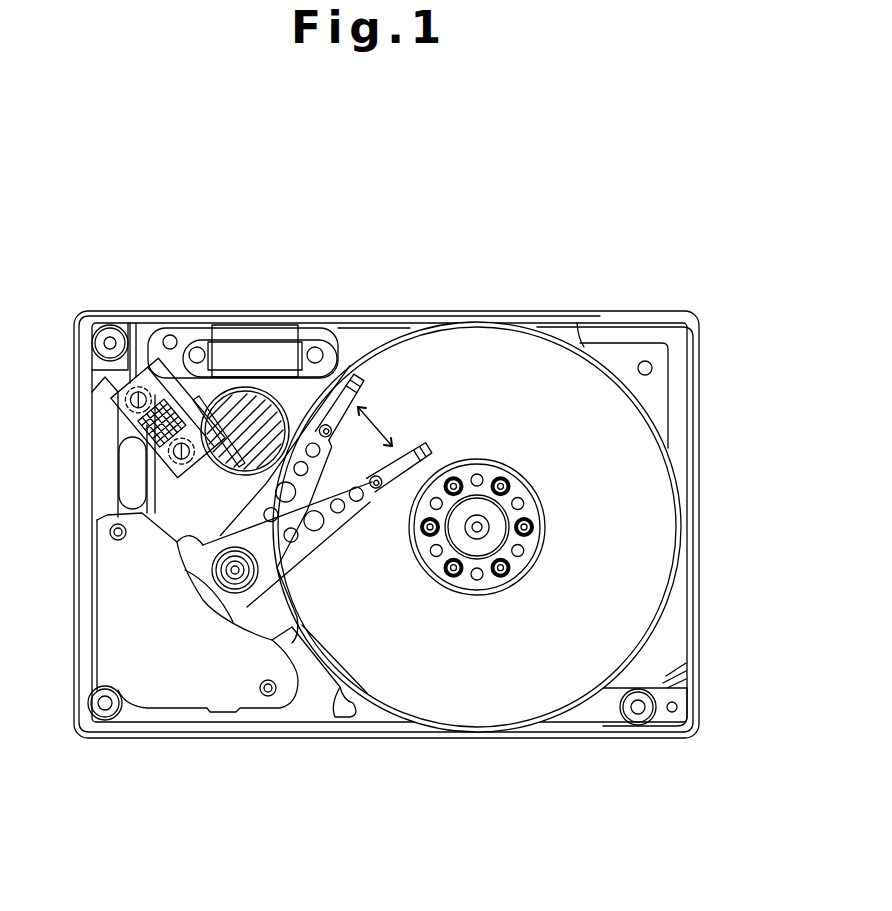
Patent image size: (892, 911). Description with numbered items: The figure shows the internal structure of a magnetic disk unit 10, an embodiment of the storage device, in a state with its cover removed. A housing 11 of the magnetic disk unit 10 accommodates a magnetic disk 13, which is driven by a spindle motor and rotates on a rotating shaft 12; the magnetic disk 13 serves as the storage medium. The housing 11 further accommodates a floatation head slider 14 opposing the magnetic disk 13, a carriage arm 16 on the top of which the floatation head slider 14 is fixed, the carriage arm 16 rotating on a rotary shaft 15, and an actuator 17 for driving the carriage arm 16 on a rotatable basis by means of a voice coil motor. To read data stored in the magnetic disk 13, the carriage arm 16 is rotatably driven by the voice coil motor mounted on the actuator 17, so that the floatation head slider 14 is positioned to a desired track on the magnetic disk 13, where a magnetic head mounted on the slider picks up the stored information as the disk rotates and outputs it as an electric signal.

The magnetic disk unit 10 is at (430, 474).
The housing 11 is at (575, 312).
The rotating shaft 12 is at (495, 535).
The magnetic disk 13 is at (650, 488).
The floatation head slider 14 is at (418, 447).
The rotary shaft 15 is at (235, 592).
The carriage arm 16 is at (303, 545).
The actuator 17 is at (163, 690).